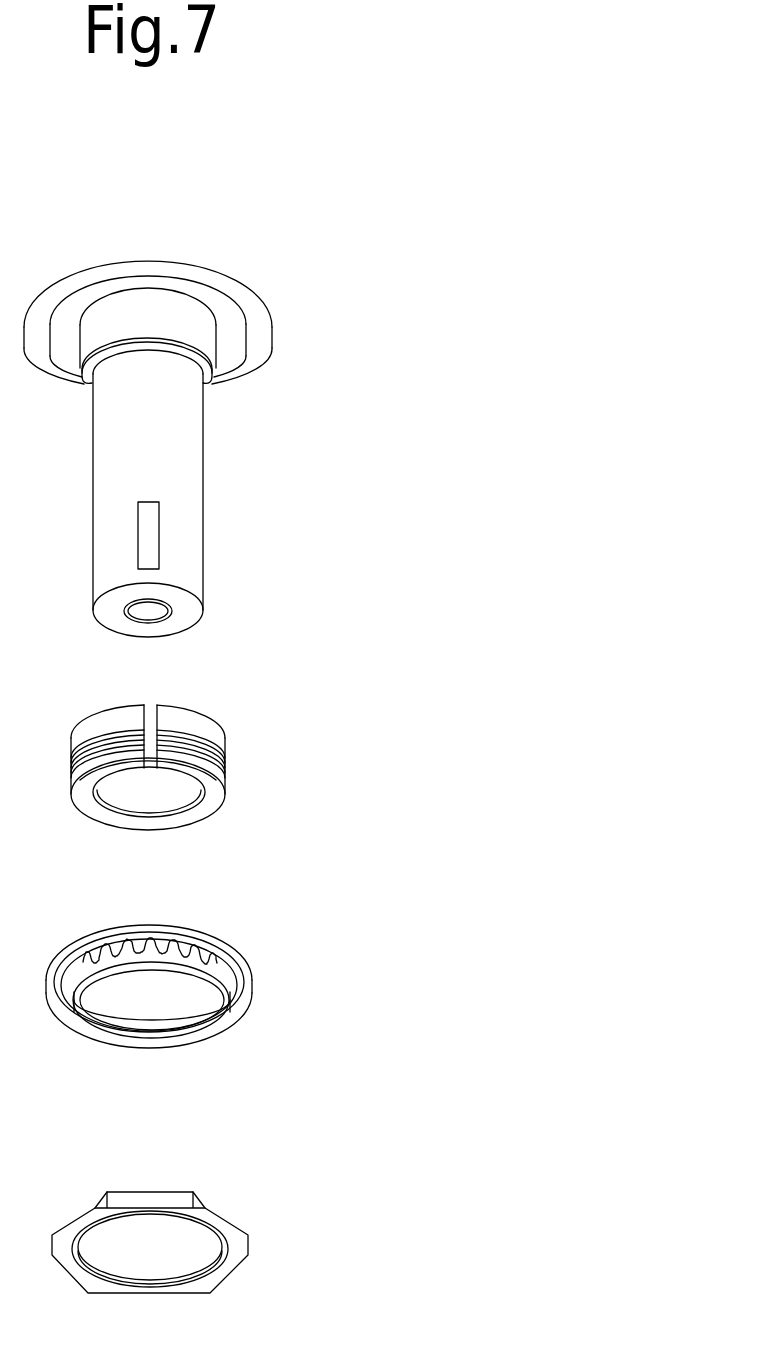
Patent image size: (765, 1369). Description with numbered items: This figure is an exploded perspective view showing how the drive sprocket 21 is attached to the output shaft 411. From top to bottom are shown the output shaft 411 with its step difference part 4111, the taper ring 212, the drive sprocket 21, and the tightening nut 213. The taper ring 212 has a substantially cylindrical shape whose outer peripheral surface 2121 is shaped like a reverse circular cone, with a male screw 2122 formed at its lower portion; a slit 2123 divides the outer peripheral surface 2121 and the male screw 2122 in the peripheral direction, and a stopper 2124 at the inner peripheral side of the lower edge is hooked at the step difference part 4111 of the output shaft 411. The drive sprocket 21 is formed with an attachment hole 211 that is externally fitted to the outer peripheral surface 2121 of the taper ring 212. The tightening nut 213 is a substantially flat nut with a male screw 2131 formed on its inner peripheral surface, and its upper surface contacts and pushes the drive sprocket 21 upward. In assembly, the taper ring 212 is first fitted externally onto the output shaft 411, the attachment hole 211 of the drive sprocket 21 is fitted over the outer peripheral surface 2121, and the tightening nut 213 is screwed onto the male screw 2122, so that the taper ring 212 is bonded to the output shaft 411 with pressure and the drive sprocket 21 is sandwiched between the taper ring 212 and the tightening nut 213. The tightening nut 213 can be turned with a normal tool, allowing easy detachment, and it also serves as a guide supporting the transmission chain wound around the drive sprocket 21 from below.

The output shaft 411 is at (193, 519).
The step difference part 4111 is at (214, 380).
The taper ring 212 is at (238, 768).
The outer peripheral surface 2121 is at (213, 737).
The male screw 2122 is at (225, 773).
The slit 2123 is at (150, 720).
The stopper 2124 is at (205, 812).
The drive sprocket 21 is at (223, 989).
The attachment hole 211 is at (212, 1022).
The tightening nut 213 is at (228, 1248).
The male screw 2131 is at (210, 1275).